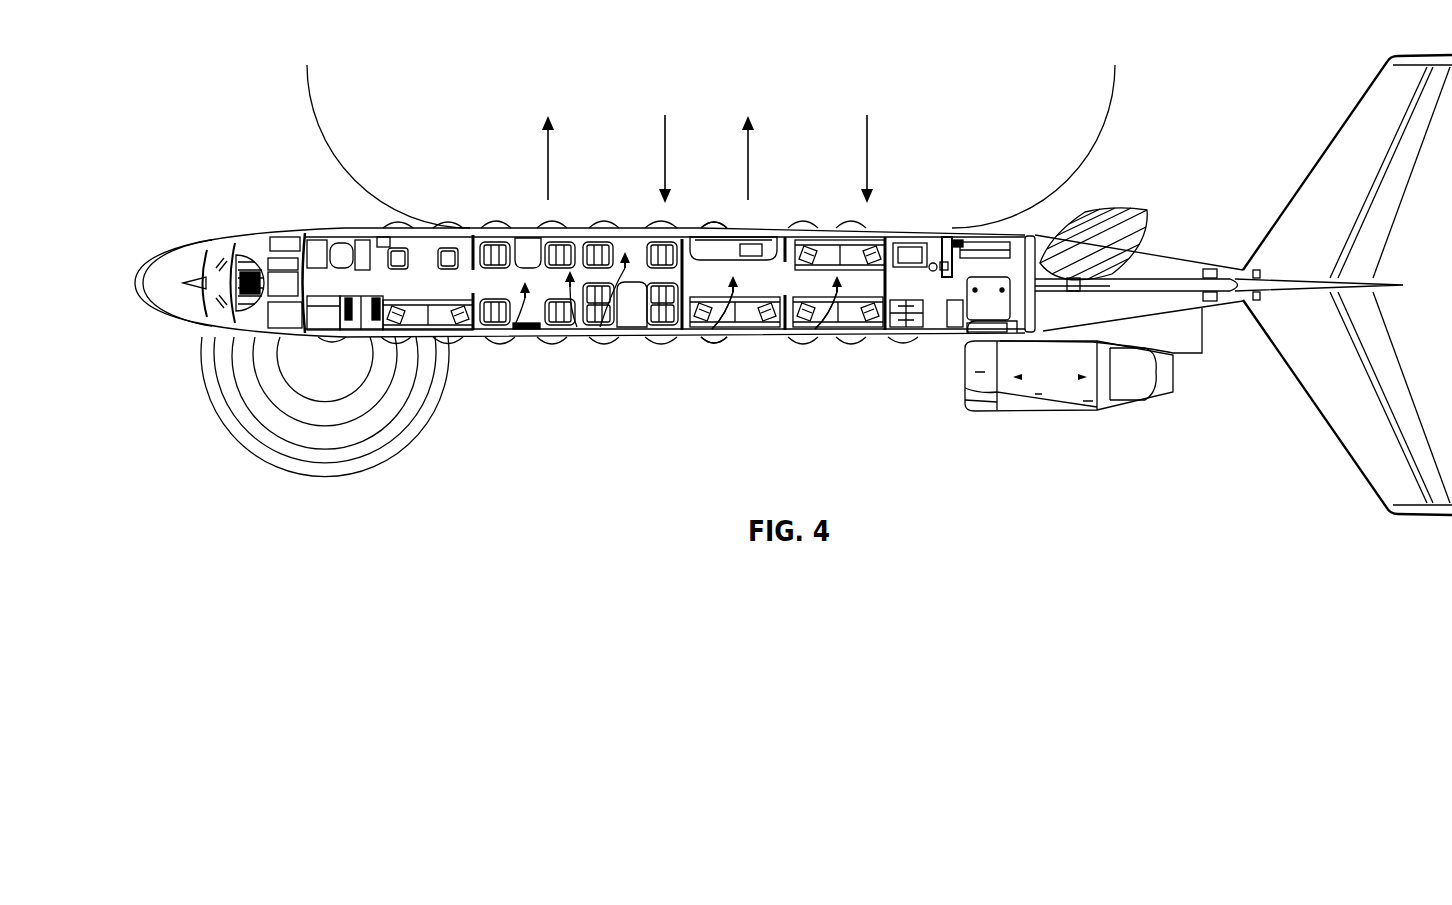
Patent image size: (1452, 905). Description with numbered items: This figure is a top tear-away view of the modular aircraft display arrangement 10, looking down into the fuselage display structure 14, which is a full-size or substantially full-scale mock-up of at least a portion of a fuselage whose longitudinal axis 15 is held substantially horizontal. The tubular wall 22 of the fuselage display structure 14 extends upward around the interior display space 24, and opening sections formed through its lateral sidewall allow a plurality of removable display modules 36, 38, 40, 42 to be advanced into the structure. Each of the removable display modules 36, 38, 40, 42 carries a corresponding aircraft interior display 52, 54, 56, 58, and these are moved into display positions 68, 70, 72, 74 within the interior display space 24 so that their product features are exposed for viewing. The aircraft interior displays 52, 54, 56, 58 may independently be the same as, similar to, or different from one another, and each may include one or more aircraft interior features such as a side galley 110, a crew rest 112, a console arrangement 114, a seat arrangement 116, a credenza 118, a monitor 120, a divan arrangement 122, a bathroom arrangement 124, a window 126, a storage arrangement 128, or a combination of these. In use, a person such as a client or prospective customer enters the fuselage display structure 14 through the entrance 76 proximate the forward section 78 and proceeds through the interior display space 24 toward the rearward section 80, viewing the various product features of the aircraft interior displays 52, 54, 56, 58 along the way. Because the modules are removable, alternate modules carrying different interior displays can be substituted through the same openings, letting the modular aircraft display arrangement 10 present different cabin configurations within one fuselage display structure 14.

The modular aircraft display arrangement 10 is at (192, 123).
The fuselage display structure 14 is at (353, 227).
The longitudinal axis 15 is at (98, 288).
The tubular wall 22 is at (905, 337).
The interior display space 24 is at (888, 280).
The removable display module 36 is at (486, 280).
The removable display module 38 is at (655, 300).
The removable display module 40 is at (735, 237).
The removable display module 42 is at (842, 237).
The aircraft interior display 52 is at (547, 328).
The aircraft interior display 54 is at (640, 327).
The aircraft interior display 56 is at (735, 327).
The aircraft interior display 58 is at (838, 327).
The display position 68 is at (523, 236).
The display position 70 is at (598, 240).
The display position 72 is at (755, 244).
The display position 74 is at (868, 178).
The entrance 76 is at (323, 352).
The forward section 78 is at (176, 316).
The rearward section 80 is at (1165, 310).
The side galley 110 is at (440, 255).
The crew rest 112 is at (430, 310).
The console arrangement 114 is at (543, 237).
The seat arrangement 116 is at (700, 335).
The credenza 118 is at (768, 258).
The monitor 120 is at (515, 329).
The divan arrangement 122 is at (800, 327).
The bathroom arrangement 124 is at (318, 258).
The window 126 is at (665, 236).
The storage arrangement 128 is at (967, 285).